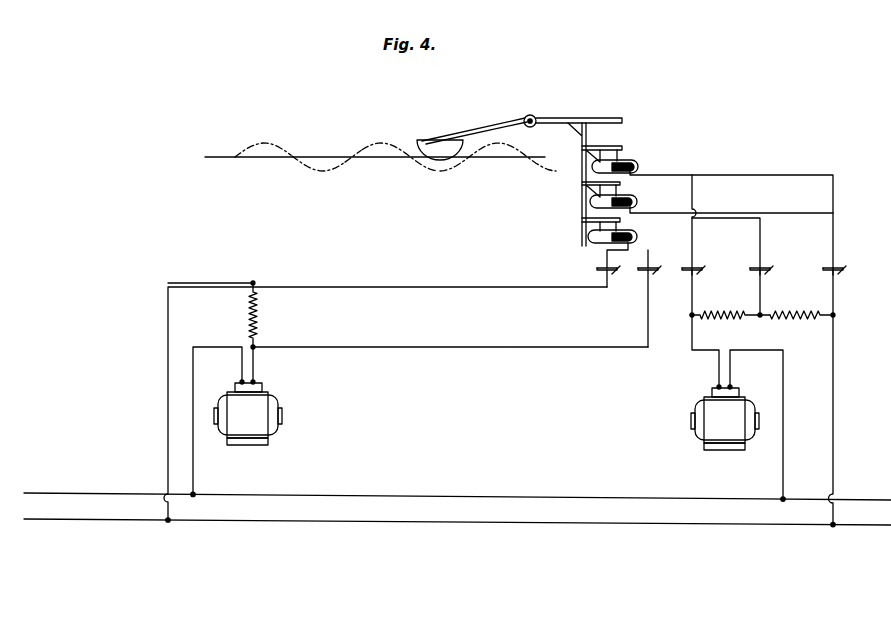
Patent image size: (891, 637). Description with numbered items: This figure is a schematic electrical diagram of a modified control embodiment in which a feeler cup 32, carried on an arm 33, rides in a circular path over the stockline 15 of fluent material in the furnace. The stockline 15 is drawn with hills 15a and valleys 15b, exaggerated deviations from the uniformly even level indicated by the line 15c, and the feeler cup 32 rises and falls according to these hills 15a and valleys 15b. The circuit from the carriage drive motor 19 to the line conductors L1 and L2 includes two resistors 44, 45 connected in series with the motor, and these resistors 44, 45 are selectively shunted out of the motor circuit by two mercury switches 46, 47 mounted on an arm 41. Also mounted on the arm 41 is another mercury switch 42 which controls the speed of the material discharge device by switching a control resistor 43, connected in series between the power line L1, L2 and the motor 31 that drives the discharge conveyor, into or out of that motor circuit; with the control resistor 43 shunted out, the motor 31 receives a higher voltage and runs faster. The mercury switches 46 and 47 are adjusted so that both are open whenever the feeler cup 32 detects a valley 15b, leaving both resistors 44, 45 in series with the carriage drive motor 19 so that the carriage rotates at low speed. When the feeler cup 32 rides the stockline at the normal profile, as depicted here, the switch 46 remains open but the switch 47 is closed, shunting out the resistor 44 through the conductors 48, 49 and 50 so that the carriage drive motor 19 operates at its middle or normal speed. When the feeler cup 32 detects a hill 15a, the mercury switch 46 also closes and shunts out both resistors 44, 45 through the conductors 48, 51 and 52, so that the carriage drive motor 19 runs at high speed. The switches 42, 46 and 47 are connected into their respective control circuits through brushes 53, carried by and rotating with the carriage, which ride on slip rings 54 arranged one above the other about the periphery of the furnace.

The stockline 15 is at (266, 160).
The hills 15a is at (382, 148).
The valleys 15b is at (315, 169).
The line 15c is at (340, 158).
The feeler cup 32 is at (426, 140).
The arm 33 is at (498, 120).
The arm 41 is at (612, 118).
The mercury switch 42 is at (589, 239).
The control resistor 43 is at (259, 315).
The resistor 44 is at (797, 314).
The resistor 45 is at (745, 313).
The mercury switch 46 is at (636, 161).
The mercury switch 47 is at (589, 203).
The conductor 48 is at (834, 244).
The conductor 49 is at (797, 213).
The conductor 50 is at (761, 235).
The conductor 51 is at (756, 175).
The conductor 52 is at (693, 236).
The brushes 53 is at (597, 268).
The slip rings 54 is at (615, 276).
The motor 31 is at (248, 412).
The carriage drive motor 19 is at (737, 424).
The power line conductor L1 is at (48, 493).
The power line conductor L2 is at (42, 522).